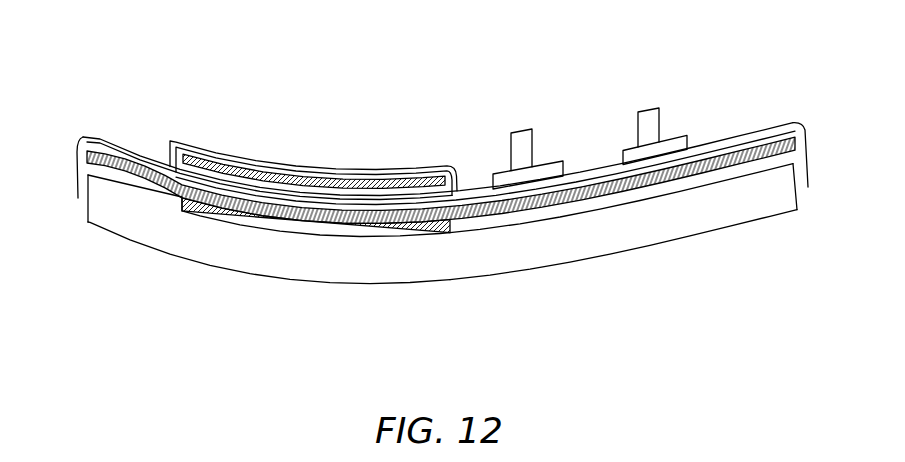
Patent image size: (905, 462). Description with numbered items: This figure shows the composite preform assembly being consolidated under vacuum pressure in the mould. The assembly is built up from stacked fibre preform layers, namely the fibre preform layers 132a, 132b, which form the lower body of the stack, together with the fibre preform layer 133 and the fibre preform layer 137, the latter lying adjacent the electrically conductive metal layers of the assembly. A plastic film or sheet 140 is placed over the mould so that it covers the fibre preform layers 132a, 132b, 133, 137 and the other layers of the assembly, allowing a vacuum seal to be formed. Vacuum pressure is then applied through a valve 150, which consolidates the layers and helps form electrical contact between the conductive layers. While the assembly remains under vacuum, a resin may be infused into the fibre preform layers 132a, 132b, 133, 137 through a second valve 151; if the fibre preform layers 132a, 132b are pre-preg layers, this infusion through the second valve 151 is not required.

The fibre preform layer 132a is at (128, 178).
The fibre preform layer 132b is at (570, 205).
The fibre preform layer 133 is at (333, 224).
The fibre preform layer 137 is at (243, 162).
The plastic film or sheet 140 is at (347, 178).
The valve 150 is at (523, 130).
The second valve 151 is at (648, 110).